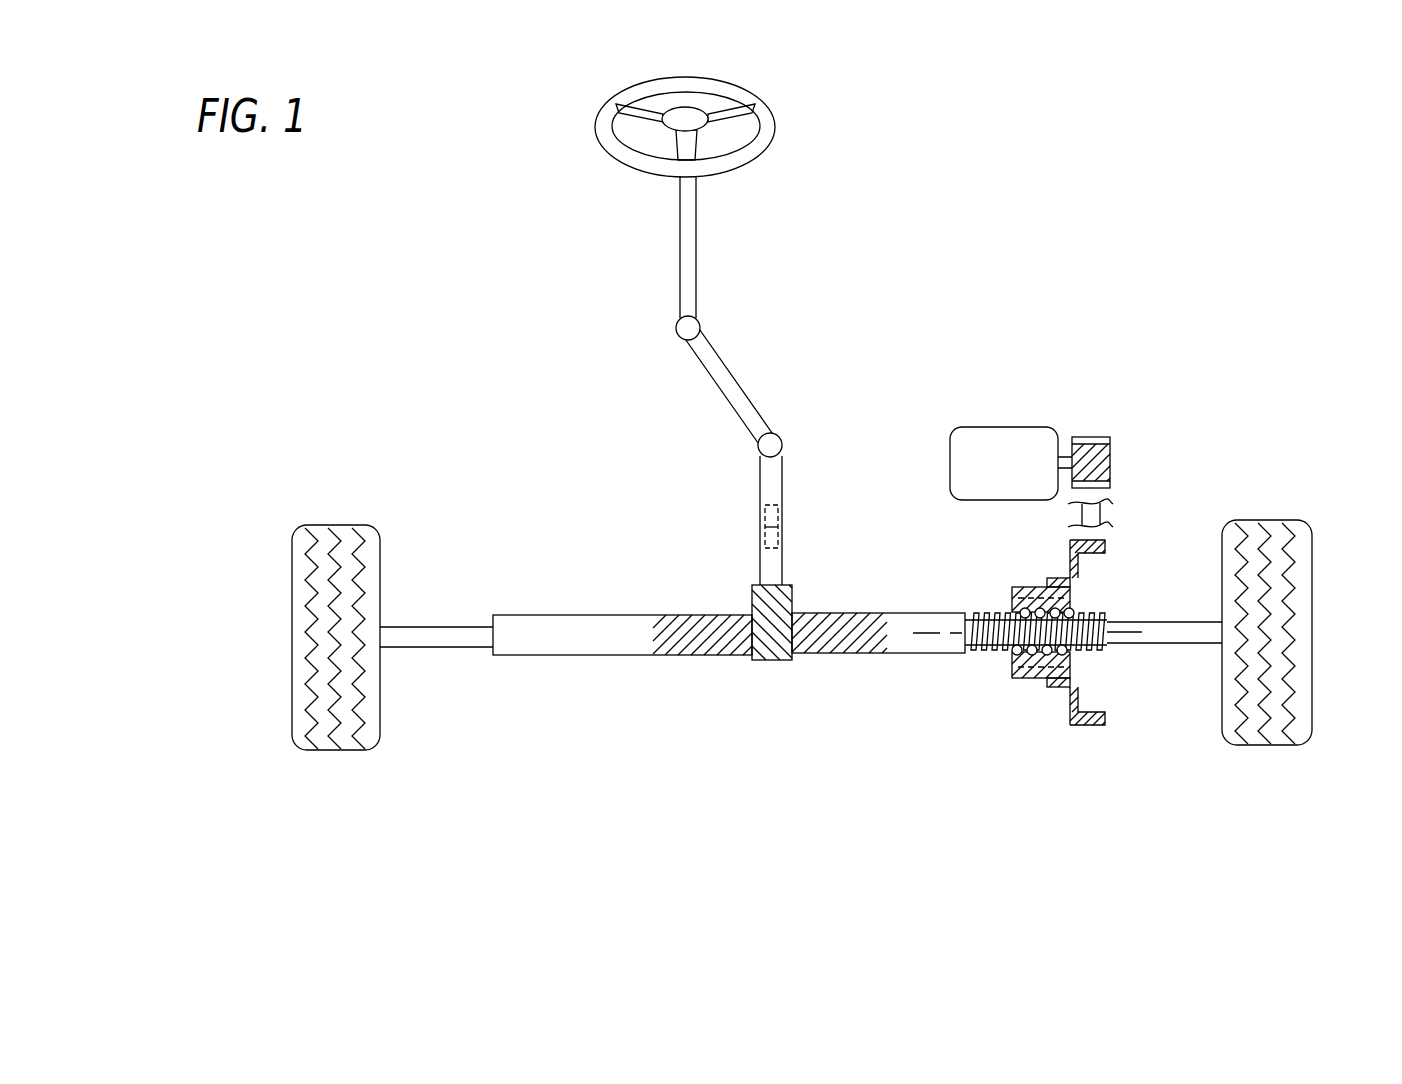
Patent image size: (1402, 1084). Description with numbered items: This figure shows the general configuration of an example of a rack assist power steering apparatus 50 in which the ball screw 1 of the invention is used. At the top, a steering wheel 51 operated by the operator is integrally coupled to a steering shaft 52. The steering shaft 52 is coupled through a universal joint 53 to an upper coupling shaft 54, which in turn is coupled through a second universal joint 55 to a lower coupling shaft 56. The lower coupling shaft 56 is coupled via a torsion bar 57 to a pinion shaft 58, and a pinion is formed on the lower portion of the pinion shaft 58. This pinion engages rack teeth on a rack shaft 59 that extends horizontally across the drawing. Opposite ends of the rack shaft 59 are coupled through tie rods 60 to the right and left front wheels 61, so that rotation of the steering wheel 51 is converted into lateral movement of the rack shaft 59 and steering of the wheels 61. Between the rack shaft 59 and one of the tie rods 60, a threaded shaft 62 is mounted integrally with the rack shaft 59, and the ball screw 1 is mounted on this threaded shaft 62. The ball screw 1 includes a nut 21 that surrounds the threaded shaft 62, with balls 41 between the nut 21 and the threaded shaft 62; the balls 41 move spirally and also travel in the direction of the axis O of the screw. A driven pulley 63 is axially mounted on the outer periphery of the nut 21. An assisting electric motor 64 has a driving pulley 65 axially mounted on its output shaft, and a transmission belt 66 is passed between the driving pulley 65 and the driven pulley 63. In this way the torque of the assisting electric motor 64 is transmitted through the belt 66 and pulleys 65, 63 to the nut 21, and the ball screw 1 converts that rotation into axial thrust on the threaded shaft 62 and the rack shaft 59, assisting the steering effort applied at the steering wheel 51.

The ball screw 1 is at (1035, 687).
The nut 21 is at (1033, 605).
The ball 41 is at (1025, 660).
The power steering apparatus 50 is at (845, 228).
The steering wheel 51 is at (773, 128).
The steering shaft 52 is at (696, 232).
The universal joint 53 is at (699, 322).
The upper coupling shaft 54 is at (728, 376).
The universal joint 55 is at (782, 440).
The lower coupling shaft 56 is at (783, 482).
The torsion bar 57 is at (765, 520).
The pinion shaft 58 is at (760, 565).
The rack shaft 59 is at (600, 655).
The tie rod 60 is at (447, 627).
The front wheel 61 is at (292, 572).
The threaded shaft 62 is at (965, 648).
The driven pulley 63 is at (1085, 727).
The assisting electric motor 64 is at (982, 427).
The driving pulley 65 is at (1085, 437).
The transmission belt 66 is at (1100, 515).
The axis O is at (938, 618).